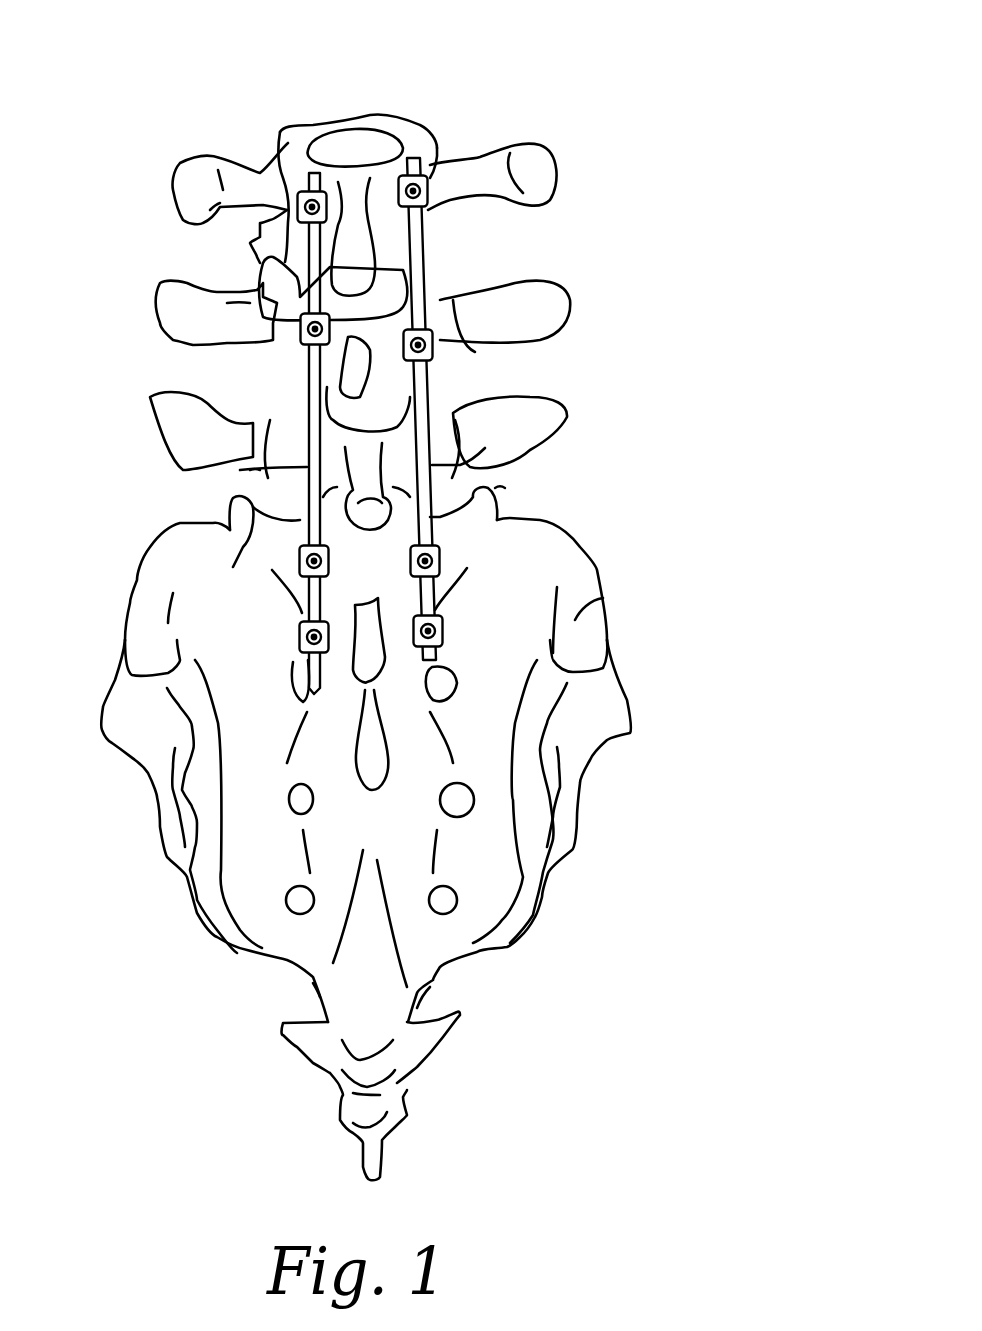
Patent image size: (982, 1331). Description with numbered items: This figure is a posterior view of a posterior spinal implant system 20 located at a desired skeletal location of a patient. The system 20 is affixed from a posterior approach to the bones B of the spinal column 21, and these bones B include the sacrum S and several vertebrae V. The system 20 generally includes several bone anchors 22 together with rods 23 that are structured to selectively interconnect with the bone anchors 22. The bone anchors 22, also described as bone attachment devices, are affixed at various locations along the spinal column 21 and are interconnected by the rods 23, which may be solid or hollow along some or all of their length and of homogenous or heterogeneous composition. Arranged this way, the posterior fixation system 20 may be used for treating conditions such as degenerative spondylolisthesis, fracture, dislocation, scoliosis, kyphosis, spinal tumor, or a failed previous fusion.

The posterior spinal implant system 20 is at (469, 349).
The spinal column 21 is at (372, 426).
The bone anchor 22 is at (423, 52).
The rod 23 is at (147, 498).
The vertebrae V is at (360, 363).
The bones B is at (589, 609).
The sacrum S is at (365, 849).